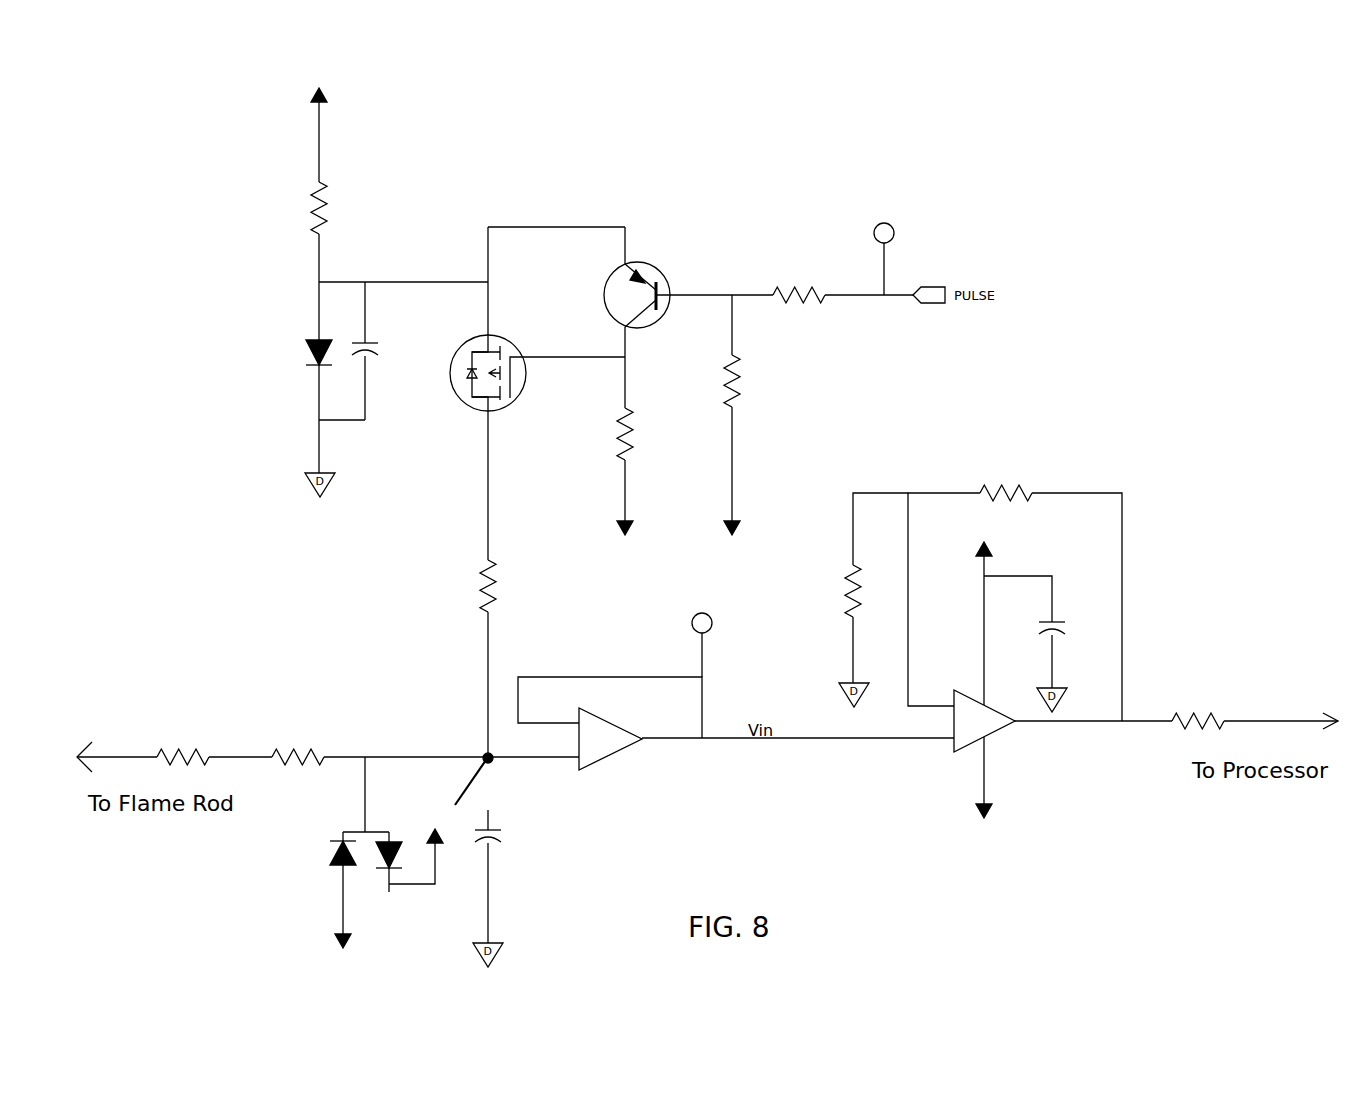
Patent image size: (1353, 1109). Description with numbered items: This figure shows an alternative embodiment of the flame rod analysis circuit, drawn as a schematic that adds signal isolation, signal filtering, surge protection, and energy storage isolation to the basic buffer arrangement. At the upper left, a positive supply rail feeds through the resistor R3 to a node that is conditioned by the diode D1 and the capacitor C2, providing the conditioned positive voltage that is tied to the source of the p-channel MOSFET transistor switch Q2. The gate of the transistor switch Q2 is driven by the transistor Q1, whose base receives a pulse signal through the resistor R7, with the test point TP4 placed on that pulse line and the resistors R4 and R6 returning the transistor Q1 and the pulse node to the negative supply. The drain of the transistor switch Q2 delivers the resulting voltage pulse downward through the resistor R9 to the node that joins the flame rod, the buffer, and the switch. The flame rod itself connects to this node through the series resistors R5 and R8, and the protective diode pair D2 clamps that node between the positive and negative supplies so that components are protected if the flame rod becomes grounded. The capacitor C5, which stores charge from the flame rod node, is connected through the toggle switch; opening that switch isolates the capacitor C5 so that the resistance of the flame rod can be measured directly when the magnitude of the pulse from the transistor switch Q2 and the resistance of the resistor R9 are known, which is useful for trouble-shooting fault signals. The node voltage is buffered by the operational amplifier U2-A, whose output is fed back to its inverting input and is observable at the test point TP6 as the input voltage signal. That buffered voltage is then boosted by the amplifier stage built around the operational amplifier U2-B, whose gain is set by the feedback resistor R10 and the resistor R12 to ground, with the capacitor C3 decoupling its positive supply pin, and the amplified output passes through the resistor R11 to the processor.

The resistor R3 is at (312, 176).
The diode D1 is at (319, 389).
The capacitor C2 is at (378, 351).
The MOSFET transistor Q2 is at (535, 378).
The transistor Q1 is at (627, 317).
The resistor R4 is at (628, 471).
The resistor R6 is at (739, 415).
The resistor R7 is at (799, 288).
The test point TP4 is at (872, 259).
The resistor R9 is at (478, 586).
The resistor R5 is at (183, 749).
The resistor R8 is at (298, 749).
The diode pair D2 is at (377, 852).
The capacitor C5 is at (502, 888).
The operational amplifier U2-A is at (736, 723).
The test point TP6 is at (690, 645).
The operational amplifier U2-B is at (1040, 668).
The resistor R10 is at (1006, 485).
The resistor R12 is at (873, 600).
The capacitor C3 is at (1040, 644).
The resistor R11 is at (1198, 731).